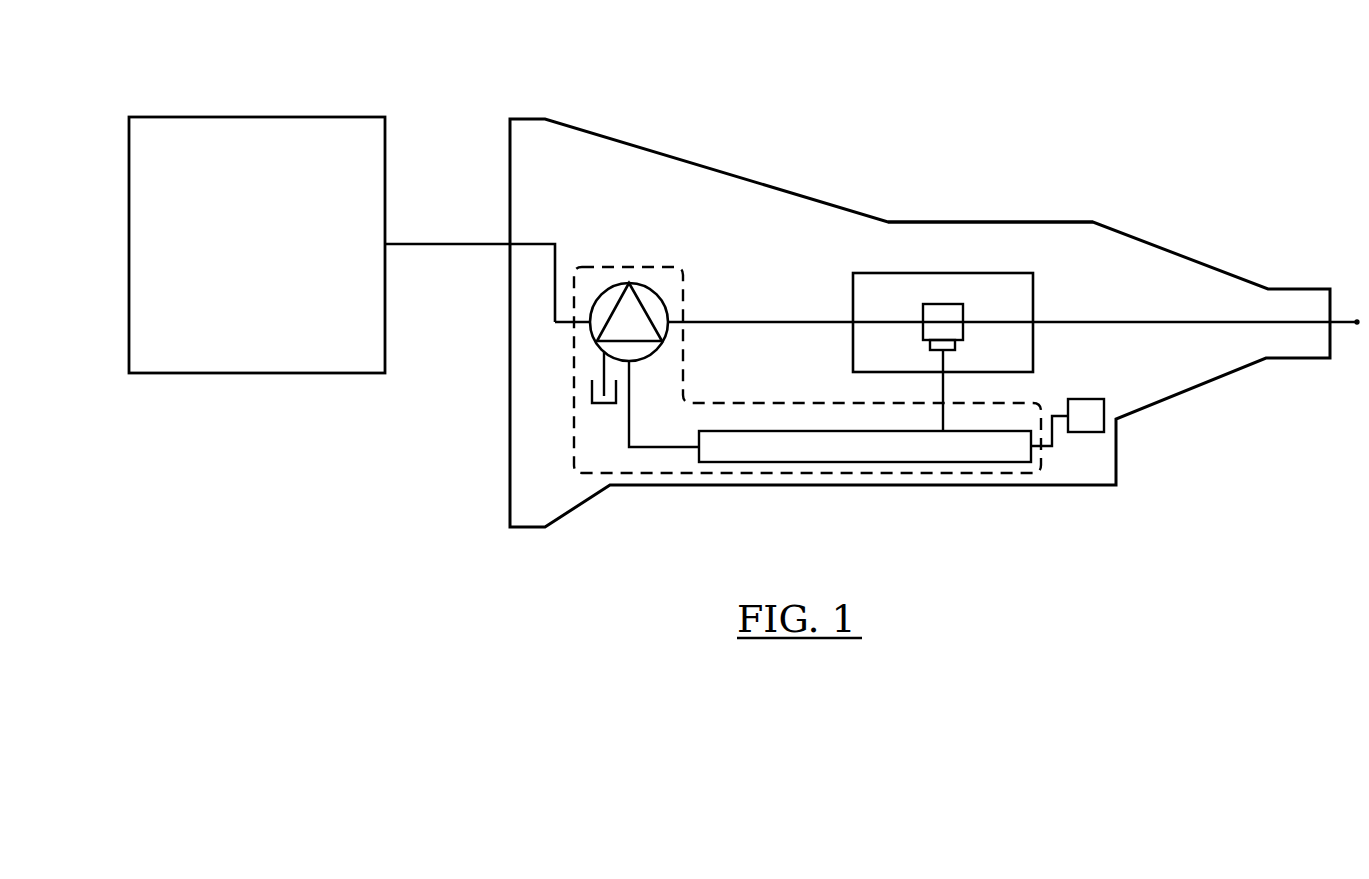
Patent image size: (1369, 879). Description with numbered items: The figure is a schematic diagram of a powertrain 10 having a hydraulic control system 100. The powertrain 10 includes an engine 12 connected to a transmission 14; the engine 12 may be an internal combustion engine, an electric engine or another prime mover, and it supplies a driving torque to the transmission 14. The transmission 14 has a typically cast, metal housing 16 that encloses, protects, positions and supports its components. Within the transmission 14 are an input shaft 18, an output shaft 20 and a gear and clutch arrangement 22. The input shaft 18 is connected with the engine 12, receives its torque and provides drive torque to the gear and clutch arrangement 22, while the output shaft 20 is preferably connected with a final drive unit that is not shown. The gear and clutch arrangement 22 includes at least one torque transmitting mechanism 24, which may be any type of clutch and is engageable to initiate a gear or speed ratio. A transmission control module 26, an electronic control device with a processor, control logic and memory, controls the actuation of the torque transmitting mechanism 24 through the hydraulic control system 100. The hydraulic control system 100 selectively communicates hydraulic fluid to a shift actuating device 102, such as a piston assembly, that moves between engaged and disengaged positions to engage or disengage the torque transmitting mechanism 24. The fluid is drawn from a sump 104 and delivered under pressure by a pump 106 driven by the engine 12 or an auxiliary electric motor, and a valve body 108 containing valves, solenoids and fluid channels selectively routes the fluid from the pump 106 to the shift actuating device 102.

The powertrain 10 is at (985, 77).
The engine 12 is at (280, 261).
The transmission 14 is at (1090, 219).
The housing 16 is at (1034, 221).
The input shaft 18 is at (441, 243).
The output shaft 20 is at (1097, 321).
The gear and clutch arrangement 22 is at (838, 250).
The torque transmitting mechanism 24 is at (943, 304).
The transmission control module 26 is at (1116, 427).
The hydraulic control system 100 is at (673, 478).
The shift actuating device 102 is at (955, 345).
The sump 104 is at (592, 403).
The pump 106 is at (631, 283).
The valve body 108 is at (830, 474).